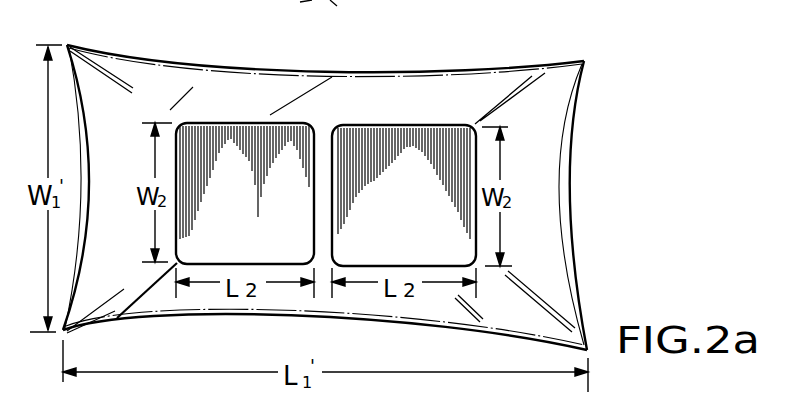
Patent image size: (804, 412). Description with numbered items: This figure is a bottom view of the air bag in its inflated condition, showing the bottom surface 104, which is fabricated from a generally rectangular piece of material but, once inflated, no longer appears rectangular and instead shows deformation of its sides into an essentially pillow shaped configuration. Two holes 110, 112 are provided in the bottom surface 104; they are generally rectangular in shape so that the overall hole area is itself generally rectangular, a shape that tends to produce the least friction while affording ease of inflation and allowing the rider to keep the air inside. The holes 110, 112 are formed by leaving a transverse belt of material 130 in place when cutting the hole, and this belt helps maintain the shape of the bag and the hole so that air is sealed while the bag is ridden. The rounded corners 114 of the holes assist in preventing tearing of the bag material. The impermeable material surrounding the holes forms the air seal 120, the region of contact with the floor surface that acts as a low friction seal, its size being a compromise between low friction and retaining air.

The bottom surface 104 is at (528, 127).
The hole 110 is at (232, 122).
The hole 112 is at (393, 125).
The rounded corners 114 is at (185, 122).
The air seal 120 is at (487, 163).
The transverse belt of material 130 is at (322, 218).